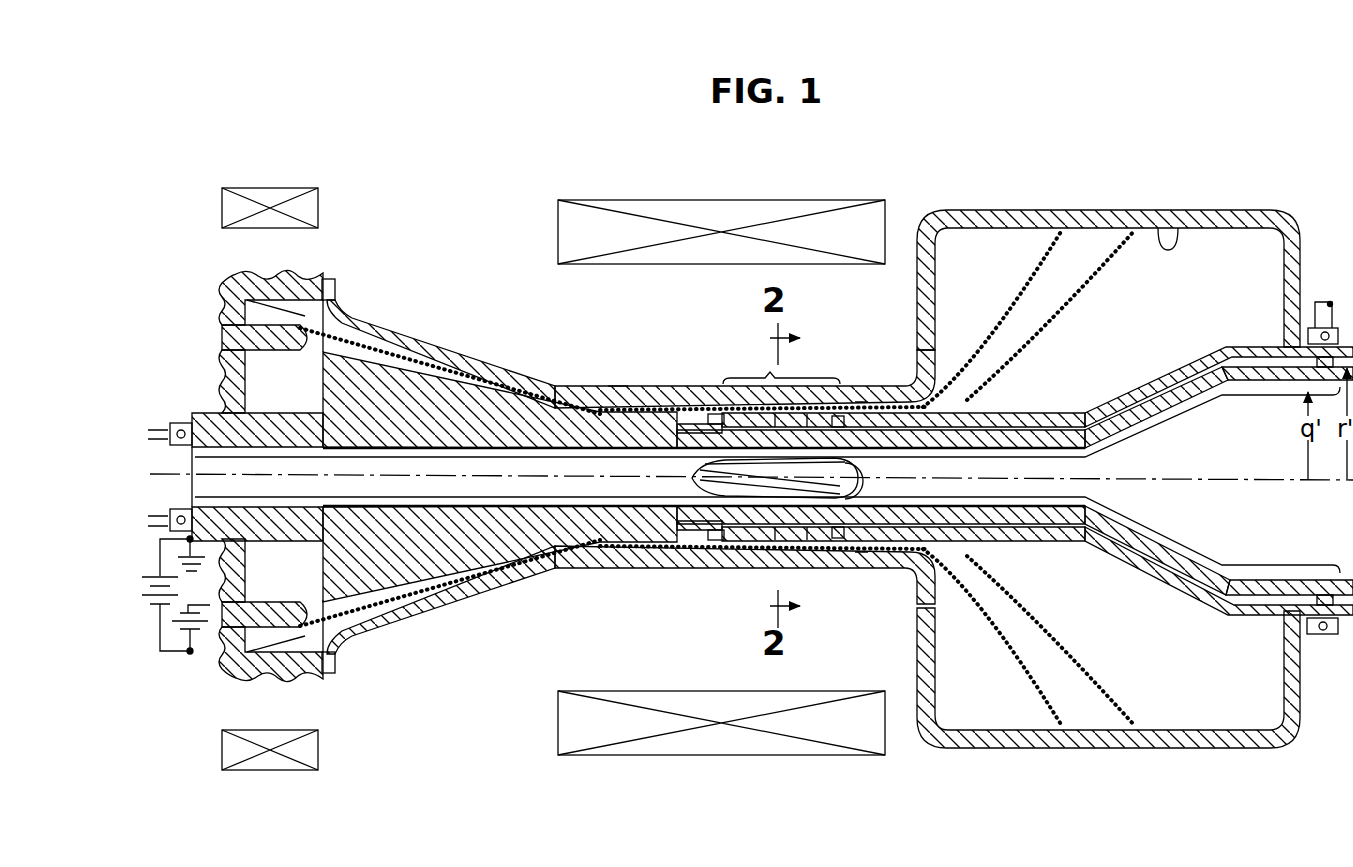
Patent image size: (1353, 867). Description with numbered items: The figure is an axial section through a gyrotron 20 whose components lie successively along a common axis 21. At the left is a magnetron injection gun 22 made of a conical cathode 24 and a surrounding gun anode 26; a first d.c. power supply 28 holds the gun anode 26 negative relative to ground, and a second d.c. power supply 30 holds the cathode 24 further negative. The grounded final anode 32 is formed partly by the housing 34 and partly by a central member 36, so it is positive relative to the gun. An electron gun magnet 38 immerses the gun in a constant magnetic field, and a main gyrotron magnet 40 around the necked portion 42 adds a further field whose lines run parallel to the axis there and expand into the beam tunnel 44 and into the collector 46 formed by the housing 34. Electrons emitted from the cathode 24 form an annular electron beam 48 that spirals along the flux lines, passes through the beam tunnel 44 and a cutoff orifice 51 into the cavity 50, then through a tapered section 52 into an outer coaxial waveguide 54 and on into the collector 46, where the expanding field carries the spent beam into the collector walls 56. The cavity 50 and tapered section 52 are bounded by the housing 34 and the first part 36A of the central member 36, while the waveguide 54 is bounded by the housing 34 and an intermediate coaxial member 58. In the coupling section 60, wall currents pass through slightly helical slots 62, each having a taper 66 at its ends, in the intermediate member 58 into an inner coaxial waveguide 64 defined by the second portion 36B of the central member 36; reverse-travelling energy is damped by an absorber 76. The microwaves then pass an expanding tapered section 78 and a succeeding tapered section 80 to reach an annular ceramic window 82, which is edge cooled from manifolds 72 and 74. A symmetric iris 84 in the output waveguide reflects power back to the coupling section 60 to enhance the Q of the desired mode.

The gyrotron 20 is at (742, 456).
The common axis 21 is at (172, 470).
The magnetron injection gun 22 is at (305, 303).
The conical cathode 24 is at (222, 332).
The gun anode 26 is at (338, 318).
The first d.c. power supply 28 is at (140, 600).
The second d.c. power supply 30 is at (175, 653).
The final anode 32 is at (440, 376).
The housing 34 is at (555, 384).
The central member 36 is at (205, 412).
The first part of the central member 36A is at (383, 456).
The second portion of the central member 36B is at (963, 458).
The electron gun magnet 38 is at (320, 200).
The main gyrotron magnet 40 is at (578, 200).
The necked portion 42 is at (648, 350).
The beam tunnel 44 is at (357, 332).
The collector 46 is at (1095, 208).
The annular electron beam 48 is at (408, 358).
The cavity 50 is at (620, 556).
The cutoff orifice 51 is at (618, 387).
The tapered section 52 is at (662, 545).
The outer coaxial waveguide 54 is at (700, 425).
The collector walls 56 is at (1173, 232).
The intermediate coaxial member 58 is at (857, 545).
The coupling section 60 is at (770, 373).
The slots 62 is at (807, 425).
The inner coaxial waveguide 64 is at (773, 545).
The taper 66 is at (692, 476).
The manifold 72 is at (181, 509).
The manifold 74 is at (1330, 334).
The absorber 76 is at (685, 423).
The expanding tapered section 78 is at (1164, 416).
The succeeding tapered section 80 is at (1273, 388).
The annular ceramic window 82 is at (1340, 636).
The symmetric iris 84 is at (860, 400).